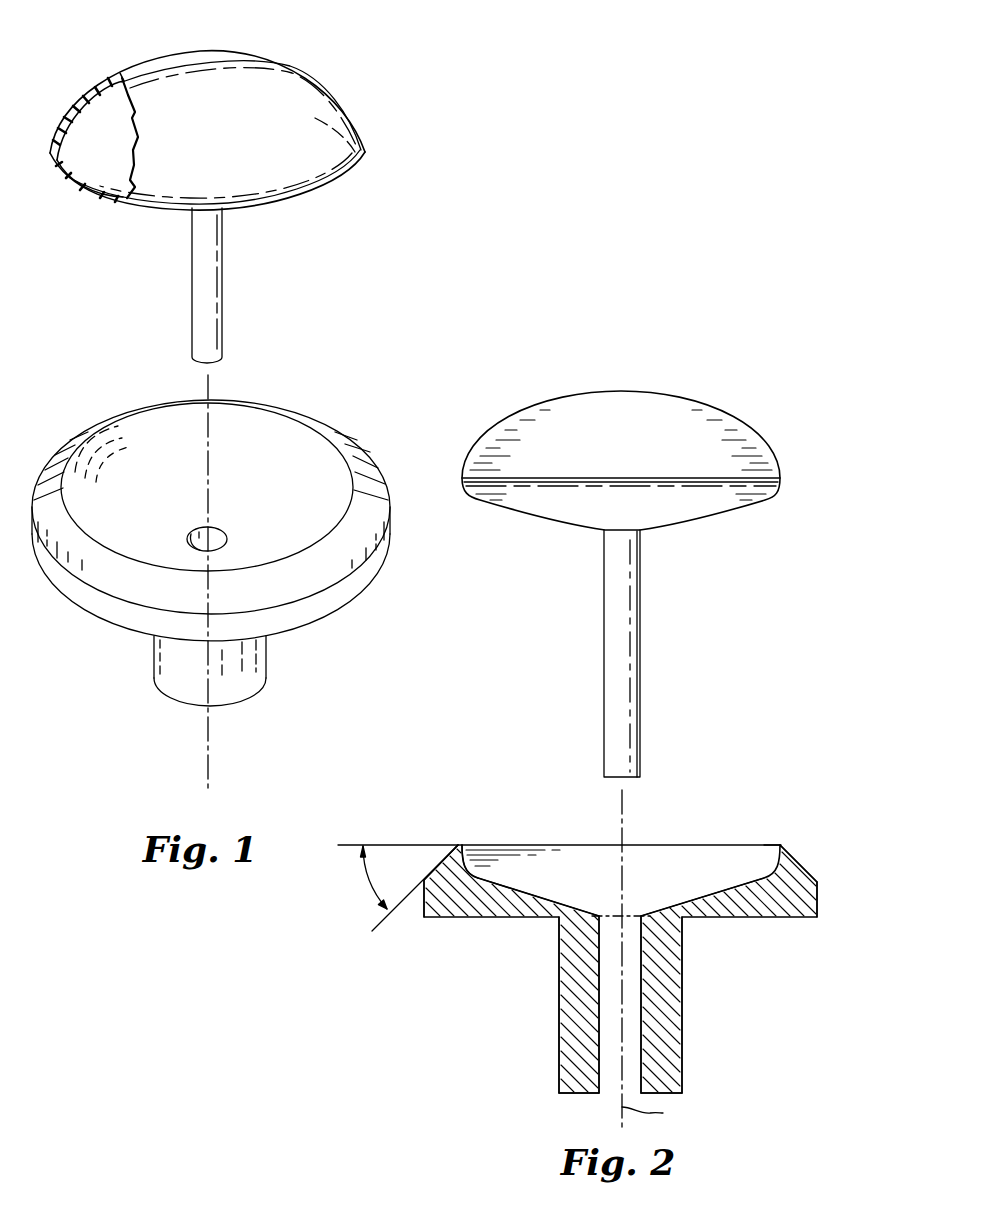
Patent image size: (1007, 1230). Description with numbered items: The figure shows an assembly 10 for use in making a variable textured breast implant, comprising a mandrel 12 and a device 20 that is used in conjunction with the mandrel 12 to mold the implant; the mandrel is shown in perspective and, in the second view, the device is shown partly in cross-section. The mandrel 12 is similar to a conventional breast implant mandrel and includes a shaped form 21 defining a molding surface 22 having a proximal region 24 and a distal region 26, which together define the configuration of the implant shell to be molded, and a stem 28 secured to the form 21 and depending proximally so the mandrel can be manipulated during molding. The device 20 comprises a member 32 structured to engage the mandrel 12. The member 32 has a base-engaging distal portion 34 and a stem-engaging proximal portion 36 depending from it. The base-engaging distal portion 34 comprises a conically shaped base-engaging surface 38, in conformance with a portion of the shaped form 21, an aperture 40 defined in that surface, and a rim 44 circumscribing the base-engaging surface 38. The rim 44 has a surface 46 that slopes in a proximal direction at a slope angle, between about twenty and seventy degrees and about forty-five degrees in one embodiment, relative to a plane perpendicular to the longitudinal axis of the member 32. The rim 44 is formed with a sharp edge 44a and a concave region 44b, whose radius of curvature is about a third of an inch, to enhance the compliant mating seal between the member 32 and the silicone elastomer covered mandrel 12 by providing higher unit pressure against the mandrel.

In FIG. 1, the assembly 10 is at (392, 350).
In FIG. 2, the assembly 10 is at (782, 776).
In FIG. 1, the mandrel 12 is at (351, 234).
In FIG. 2, the mandrel 12 is at (767, 554).
In FIG. 1, the device 20 is at (371, 450).
In FIG. 2, the device 20 is at (804, 840).
In FIG. 1, the shaped form 21 is at (372, 140).
In FIG. 2, the shaped form 21 is at (770, 439).
In FIG. 1, the molding surface 22 is at (313, 120).
In FIG. 2, the molding surface 22 is at (695, 428).
In FIG. 1, the proximal region 24 is at (267, 208).
In FIG. 2, the proximal region 24 is at (678, 522).
In FIG. 1, the distal region 26 is at (233, 73).
In FIG. 2, the distal region 26 is at (626, 394).
In FIG. 1, the stem 28 is at (223, 303).
In FIG. 2, the stem 28 is at (638, 625).
In FIG. 1, the member 32 is at (374, 592).
In FIG. 2, the member 32 is at (826, 905).
In FIG. 1, the base-engaging distal portion 34 is at (300, 433).
In FIG. 1, the stem-engaging proximal portion 36 is at (265, 668).
In FIG. 2, the stem-engaging proximal portion 36 is at (667, 1058).
In FIG. 1, the base-engaging surface 38 is at (260, 478).
In FIG. 2, the base-engaging surface 38 is at (715, 887).
In FIG. 1, the aperture 40 is at (192, 530).
In FIG. 2, the aperture 40 is at (607, 918).
In FIG. 1, the rim 44 is at (128, 590).
In FIG. 2, the rim 44 is at (806, 869).
In FIG. 2, the sharp edge 44a is at (458, 846).
In FIG. 2, the concave region 44b is at (463, 870).
In FIG. 1, the surface 46 is at (252, 596).
In FIG. 2, the surface 46 is at (786, 843).